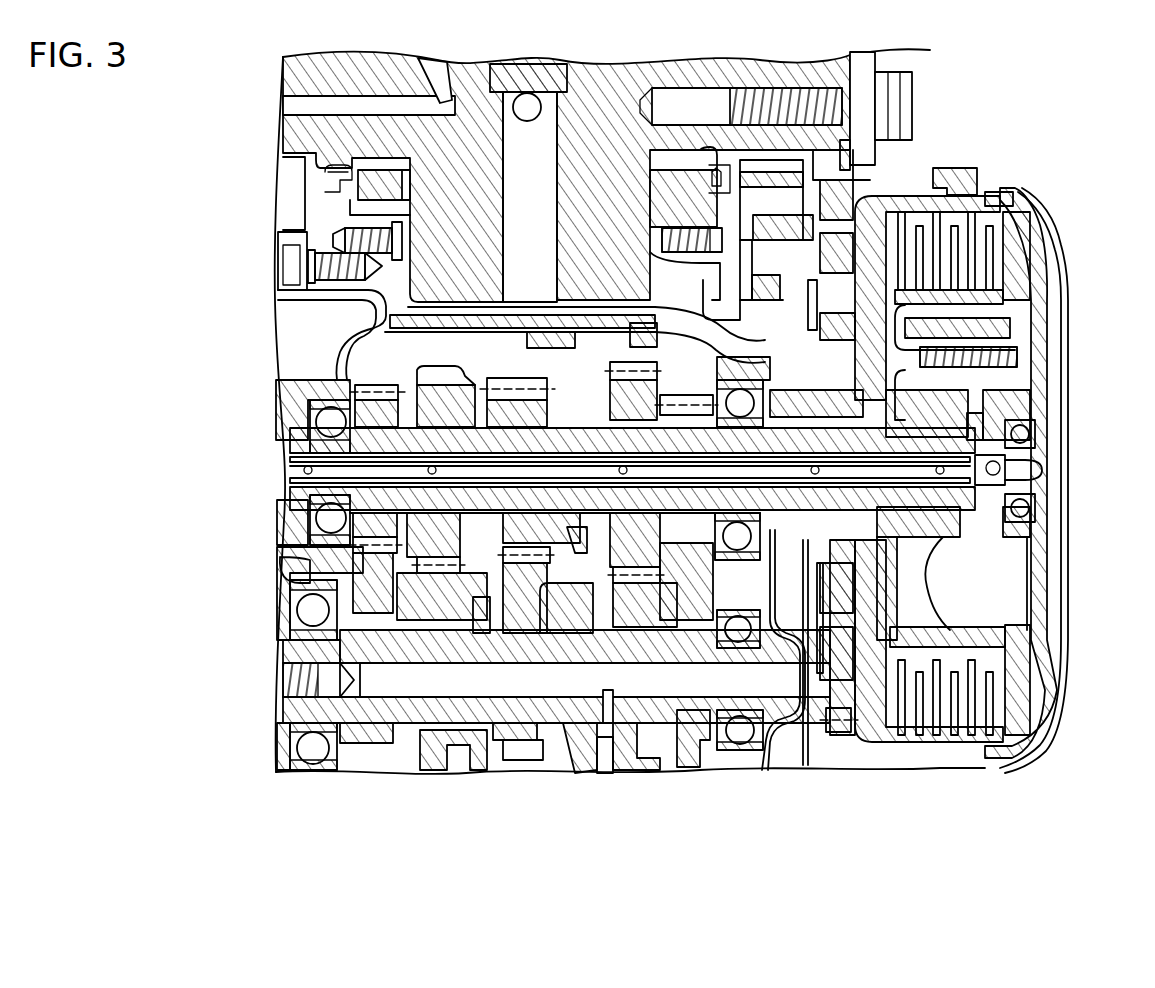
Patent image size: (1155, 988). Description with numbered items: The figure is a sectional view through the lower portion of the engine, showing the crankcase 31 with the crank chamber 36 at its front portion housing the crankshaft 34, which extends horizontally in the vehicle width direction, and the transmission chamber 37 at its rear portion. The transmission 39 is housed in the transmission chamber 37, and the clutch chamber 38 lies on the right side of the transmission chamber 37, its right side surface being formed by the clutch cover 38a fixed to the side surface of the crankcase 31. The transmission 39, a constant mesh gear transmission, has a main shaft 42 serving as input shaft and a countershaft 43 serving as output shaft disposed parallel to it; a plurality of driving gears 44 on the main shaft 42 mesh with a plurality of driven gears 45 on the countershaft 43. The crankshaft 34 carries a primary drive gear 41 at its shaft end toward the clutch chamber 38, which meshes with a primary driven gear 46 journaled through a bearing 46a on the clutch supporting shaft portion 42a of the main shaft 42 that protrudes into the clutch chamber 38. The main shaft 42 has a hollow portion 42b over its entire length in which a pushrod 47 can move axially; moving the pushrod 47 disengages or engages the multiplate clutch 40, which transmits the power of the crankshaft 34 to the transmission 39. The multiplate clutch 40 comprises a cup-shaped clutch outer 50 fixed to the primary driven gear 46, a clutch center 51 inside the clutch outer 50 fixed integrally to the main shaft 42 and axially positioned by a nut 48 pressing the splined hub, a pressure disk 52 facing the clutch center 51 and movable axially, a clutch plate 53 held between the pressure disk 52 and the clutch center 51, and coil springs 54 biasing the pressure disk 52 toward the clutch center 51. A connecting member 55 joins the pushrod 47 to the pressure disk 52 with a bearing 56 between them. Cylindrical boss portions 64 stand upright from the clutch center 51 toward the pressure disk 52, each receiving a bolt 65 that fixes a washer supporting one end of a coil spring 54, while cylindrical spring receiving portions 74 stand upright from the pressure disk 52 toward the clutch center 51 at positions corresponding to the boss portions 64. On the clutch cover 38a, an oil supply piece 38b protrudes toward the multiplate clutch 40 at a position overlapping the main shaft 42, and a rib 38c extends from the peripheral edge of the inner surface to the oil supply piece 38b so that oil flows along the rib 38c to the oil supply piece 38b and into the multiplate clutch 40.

The crankcase 31 is at (300, 541).
The crankshaft 34 is at (300, 128).
The crank chamber 36 is at (405, 307).
The transmission chamber 37 is at (332, 568).
The clutch chamber 38 is at (1047, 620).
The clutch cover 38a is at (1050, 572).
The oil supply piece 38b is at (1045, 470).
The rib 38c is at (1005, 308).
The transmission 39 is at (516, 378).
The multiplate clutch 40 is at (1015, 205).
The primary drive gear 41 is at (848, 190).
The main shaft 42 is at (290, 447).
The clutch supporting shaft portion 42a is at (800, 485).
The hollow portion 42b is at (473, 453).
The countershaft 43 is at (330, 660).
The driving gears 44 is at (392, 400).
The driven gears 45 is at (430, 772).
The primary driven gear 46 is at (850, 730).
The bearing 46a is at (838, 735).
The pushrod 47 is at (786, 700).
The nut 48 is at (1005, 522).
The clutch outer 50 is at (900, 205).
The clutch center 51 is at (935, 242).
The pressure disk 52 is at (1030, 268).
The clutch plate 53 is at (992, 205).
The coil springs 54 is at (1035, 358).
The connecting member 55 is at (1035, 505).
The bearing 56 is at (1035, 433).
The boss portions 64 is at (1020, 380).
The bolt 65 is at (1005, 372).
The spring receiving portions 74 is at (1015, 286).